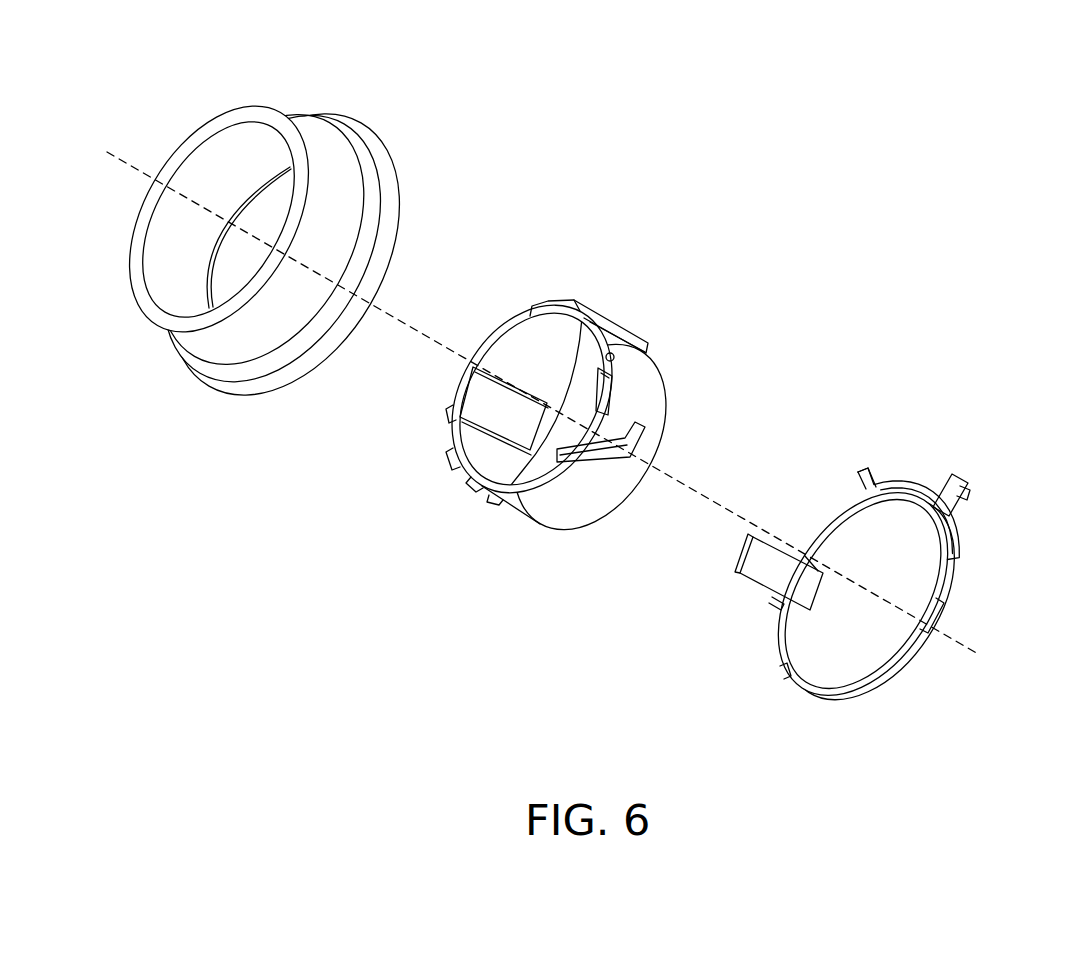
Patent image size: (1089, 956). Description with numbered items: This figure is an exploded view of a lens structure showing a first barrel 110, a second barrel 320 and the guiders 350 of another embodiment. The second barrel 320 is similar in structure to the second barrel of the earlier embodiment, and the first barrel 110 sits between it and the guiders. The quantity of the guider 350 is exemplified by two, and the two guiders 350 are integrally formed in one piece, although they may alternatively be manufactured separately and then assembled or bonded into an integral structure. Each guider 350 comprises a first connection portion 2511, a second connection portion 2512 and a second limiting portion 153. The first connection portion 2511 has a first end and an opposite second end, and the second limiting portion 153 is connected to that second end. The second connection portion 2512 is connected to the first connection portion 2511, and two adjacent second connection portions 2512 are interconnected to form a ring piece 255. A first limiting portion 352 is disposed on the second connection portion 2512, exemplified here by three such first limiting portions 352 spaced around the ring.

The second barrel 320 is at (373, 100).
The first barrel 110 is at (627, 312).
The ring piece 255 is at (875, 603).
The first connection portion 2511 is at (883, 487).
The second connection portion 2512 is at (808, 685).
The guider 350 is at (975, 472).
The first limiting portion 352 is at (863, 483).
The second limiting portion 153 is at (957, 500).